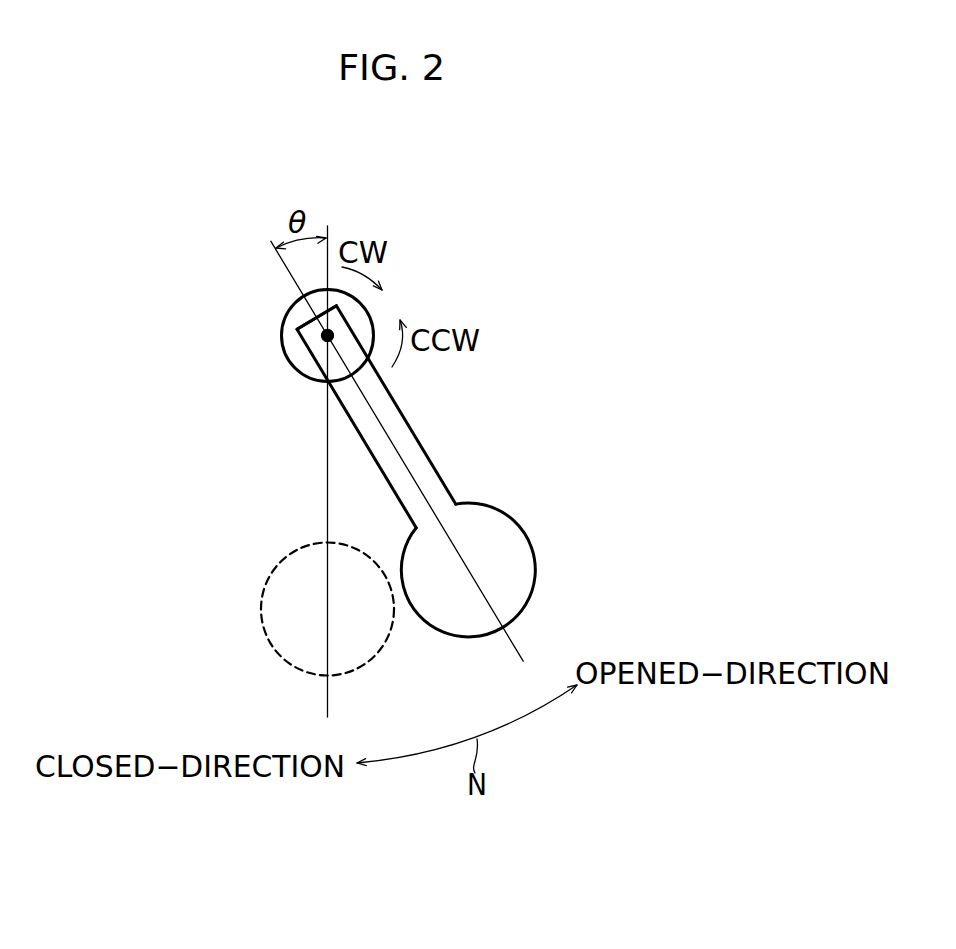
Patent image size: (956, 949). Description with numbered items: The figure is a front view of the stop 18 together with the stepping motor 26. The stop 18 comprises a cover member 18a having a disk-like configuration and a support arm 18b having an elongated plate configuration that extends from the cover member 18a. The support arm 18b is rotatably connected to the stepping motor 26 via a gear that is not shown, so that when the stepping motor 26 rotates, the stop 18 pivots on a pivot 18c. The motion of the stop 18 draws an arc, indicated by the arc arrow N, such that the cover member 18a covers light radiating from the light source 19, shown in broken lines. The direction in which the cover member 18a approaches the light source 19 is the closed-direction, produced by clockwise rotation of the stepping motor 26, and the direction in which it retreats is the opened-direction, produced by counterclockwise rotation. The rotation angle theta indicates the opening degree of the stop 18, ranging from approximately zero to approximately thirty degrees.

The stop 18 is at (458, 458).
The cover member 18a is at (537, 553).
The support arm 18b is at (428, 455).
The pivot 18c is at (334, 335).
The light source 19 is at (262, 610).
The stepping motor 26 is at (282, 334).